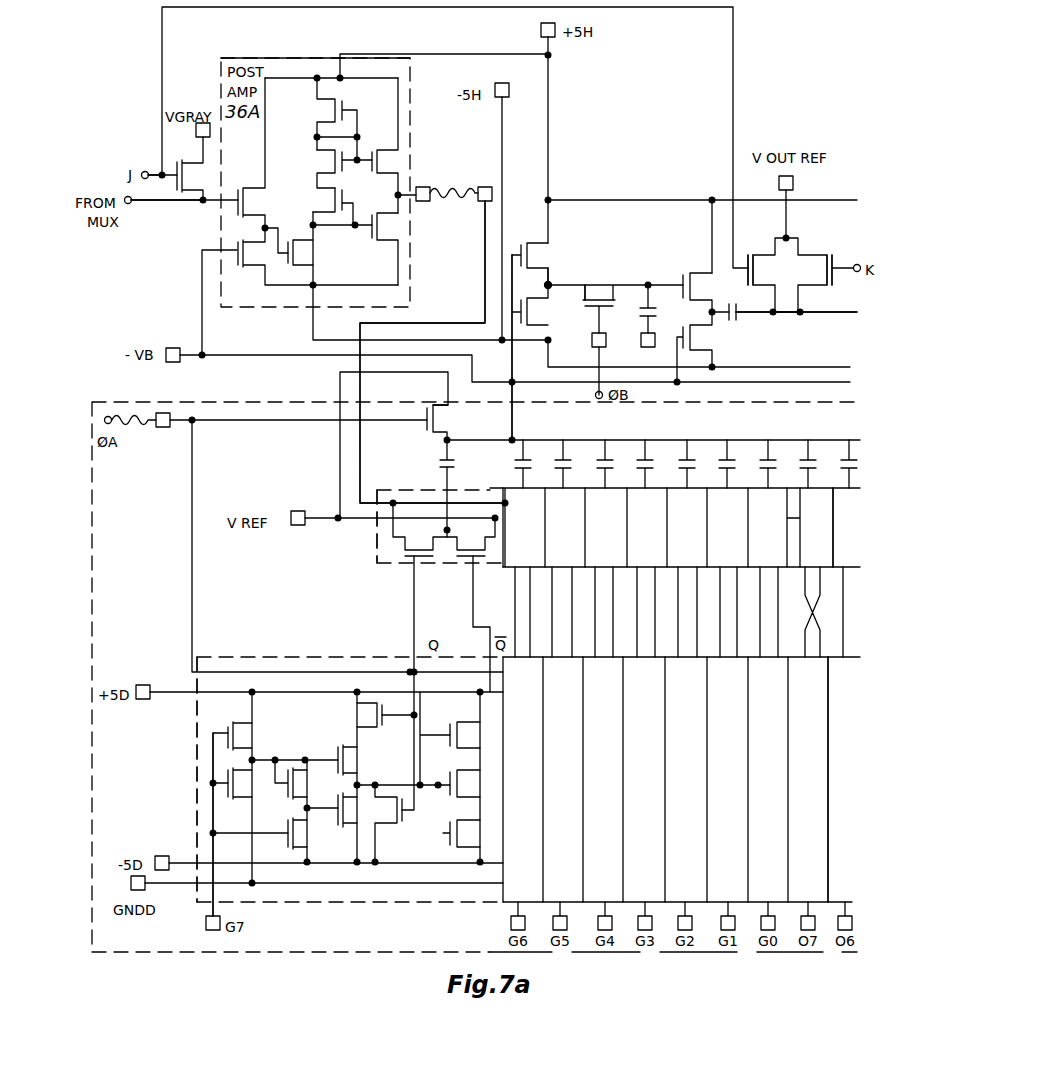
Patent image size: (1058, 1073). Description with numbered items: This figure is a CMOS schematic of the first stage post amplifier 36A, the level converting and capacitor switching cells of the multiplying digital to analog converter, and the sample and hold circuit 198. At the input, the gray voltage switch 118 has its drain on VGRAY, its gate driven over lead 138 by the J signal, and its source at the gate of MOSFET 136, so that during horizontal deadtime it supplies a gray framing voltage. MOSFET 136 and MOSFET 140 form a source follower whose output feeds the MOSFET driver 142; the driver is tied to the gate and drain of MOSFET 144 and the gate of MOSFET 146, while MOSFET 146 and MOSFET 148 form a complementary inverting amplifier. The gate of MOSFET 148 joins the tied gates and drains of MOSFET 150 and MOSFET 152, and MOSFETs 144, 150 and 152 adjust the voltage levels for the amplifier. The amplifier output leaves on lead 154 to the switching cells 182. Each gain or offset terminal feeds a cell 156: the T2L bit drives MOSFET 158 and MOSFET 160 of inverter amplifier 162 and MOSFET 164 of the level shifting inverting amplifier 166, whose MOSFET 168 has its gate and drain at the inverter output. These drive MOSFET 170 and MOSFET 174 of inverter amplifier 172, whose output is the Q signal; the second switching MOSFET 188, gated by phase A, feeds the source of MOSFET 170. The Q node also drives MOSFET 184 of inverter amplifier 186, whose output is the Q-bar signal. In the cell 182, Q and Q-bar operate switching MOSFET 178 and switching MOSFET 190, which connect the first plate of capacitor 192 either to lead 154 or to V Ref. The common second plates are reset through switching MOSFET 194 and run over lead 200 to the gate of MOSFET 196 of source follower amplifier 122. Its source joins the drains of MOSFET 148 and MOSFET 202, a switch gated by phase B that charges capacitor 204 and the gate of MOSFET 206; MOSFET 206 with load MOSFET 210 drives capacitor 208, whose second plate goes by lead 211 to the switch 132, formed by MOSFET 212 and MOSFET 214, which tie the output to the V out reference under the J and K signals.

The gray voltage switch 118 is at (177, 192).
The source follower amplifier 122 is at (533, 285).
The switch 132 is at (805, 248).
The MOSFET 136 is at (233, 180).
The lead 138 is at (157, 167).
The MOSFET 140 is at (238, 230).
The MOSFET driver 142 is at (287, 270).
The MOSFET 144 is at (353, 185).
The MOSFET 146 is at (375, 250).
The MOSFET 148 is at (380, 160).
The MOSFET 150 is at (333, 162).
The MOSFET 152 is at (353, 90).
The lead 154 is at (483, 240).
The cell 156 is at (195, 787).
The MOSFET 158 is at (232, 802).
The MOSFET 160 is at (248, 720).
The inverter amplifier 162 is at (208, 763).
The MOSFET 164 is at (288, 850).
The level shifting inverting amplifier 166 is at (300, 800).
The MOSFET 168 is at (285, 768).
The MOSFET 170 is at (355, 720).
The inverter amplifier 172 is at (342, 785).
The MOSFET 174 is at (345, 835).
The switching MOSFET 178 is at (402, 553).
The cell 182 is at (377, 532).
The MOSFET 184 is at (455, 728).
The inverter amplifier 186 is at (475, 775).
The second switching MOSFET 188 is at (395, 715).
The switching MOSFET 190 is at (452, 555).
The capacitor 192 is at (437, 463).
The switching MOSFET 194 is at (430, 432).
The MOSFET 196 is at (520, 245).
The sample and hold circuit 198 is at (620, 267).
The lead 200 is at (512, 410).
The MOSFET 202 is at (600, 293).
The capacitor 204 is at (672, 265).
The MOSFET 206 is at (702, 245).
The capacitor 208 is at (733, 330).
The MOSFET 210 is at (712, 367).
The lead 211 is at (817, 312).
The MOSFET 212 is at (770, 242).
The MOSFET 214 is at (823, 283).
The first stage post amplifier 36A is at (315, 90).